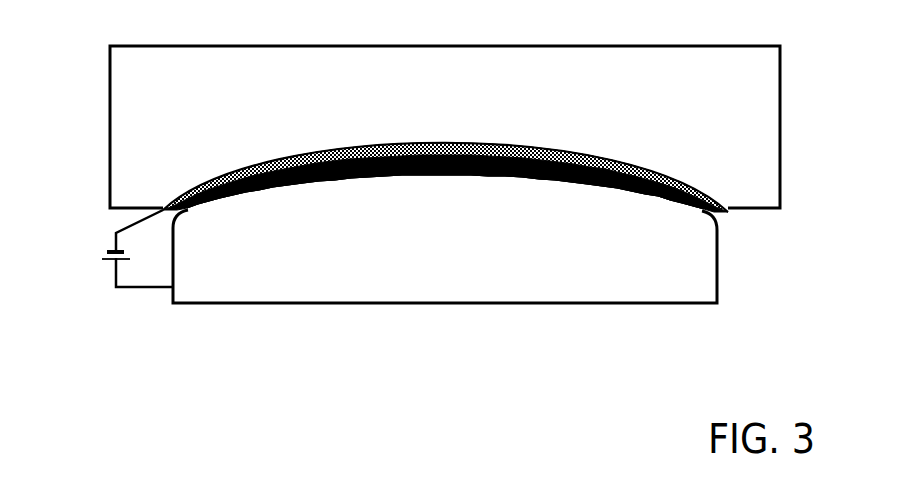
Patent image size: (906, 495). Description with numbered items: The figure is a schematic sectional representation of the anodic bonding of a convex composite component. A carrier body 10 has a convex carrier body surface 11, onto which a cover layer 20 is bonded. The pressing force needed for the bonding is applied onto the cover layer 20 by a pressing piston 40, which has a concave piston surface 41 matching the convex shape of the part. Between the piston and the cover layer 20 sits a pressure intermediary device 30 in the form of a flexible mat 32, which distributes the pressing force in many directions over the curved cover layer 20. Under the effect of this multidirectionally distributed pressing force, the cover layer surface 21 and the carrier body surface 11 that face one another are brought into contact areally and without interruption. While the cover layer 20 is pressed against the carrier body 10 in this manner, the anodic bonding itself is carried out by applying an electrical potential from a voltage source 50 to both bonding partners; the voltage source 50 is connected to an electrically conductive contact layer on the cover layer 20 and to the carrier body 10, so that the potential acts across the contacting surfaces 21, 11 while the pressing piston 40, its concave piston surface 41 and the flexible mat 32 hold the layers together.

The carrier body 10 is at (308, 278).
The carrier body surface 11 is at (480, 172).
The cover layer 20 is at (724, 222).
The cover layer surface 21 is at (480, 172).
The pressure intermediary device 30 is at (725, 215).
The flexible mat 32 is at (360, 147).
The pressing piston 40 is at (128, 97).
The concave piston surface 41 is at (560, 147).
The voltage source 50 is at (93, 268).